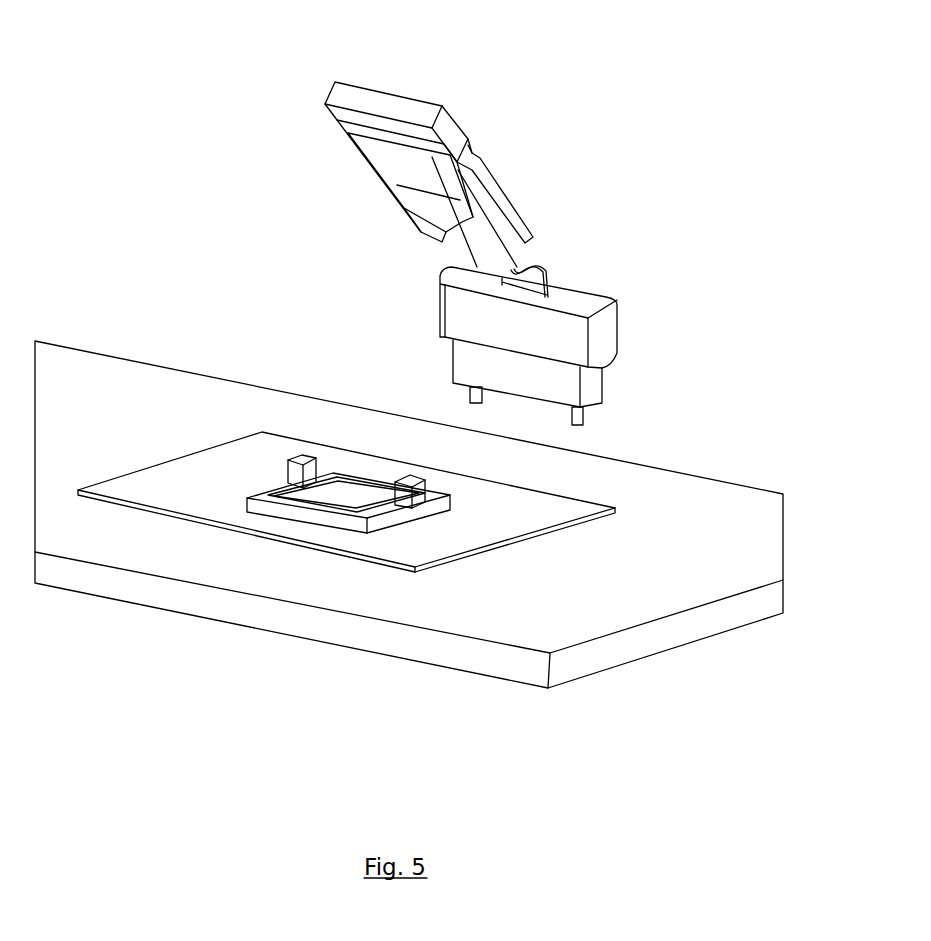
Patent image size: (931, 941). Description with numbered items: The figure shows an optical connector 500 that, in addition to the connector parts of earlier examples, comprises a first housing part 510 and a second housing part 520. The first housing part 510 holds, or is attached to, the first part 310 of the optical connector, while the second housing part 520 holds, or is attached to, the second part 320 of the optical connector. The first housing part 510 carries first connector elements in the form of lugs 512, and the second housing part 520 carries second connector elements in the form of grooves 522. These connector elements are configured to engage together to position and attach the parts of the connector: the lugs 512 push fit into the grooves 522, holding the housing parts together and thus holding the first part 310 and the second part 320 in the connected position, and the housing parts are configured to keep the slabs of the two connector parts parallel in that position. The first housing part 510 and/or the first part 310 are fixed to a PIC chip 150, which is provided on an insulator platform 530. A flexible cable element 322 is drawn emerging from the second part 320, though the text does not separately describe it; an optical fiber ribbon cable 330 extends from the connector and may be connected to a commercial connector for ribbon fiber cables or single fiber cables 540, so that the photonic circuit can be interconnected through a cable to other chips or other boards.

The optical connector 500 is at (192, 185).
The second housing part 520 is at (345, 97).
The grooves 522 is at (468, 145).
The second part of the optical connector 320 is at (400, 150).
The flexible cable 322 is at (438, 200).
The optical fiber ribbon cable 330 is at (537, 268).
The commercial connector for ribbon fiber cables or single fiber cables 540 is at (587, 340).
The PIC chip 150 is at (190, 475).
The lugs 512 is at (303, 457).
The first part of the optical connector 310 is at (355, 497).
The first housing part 510 is at (302, 512).
The insulator platform 530 is at (598, 653).